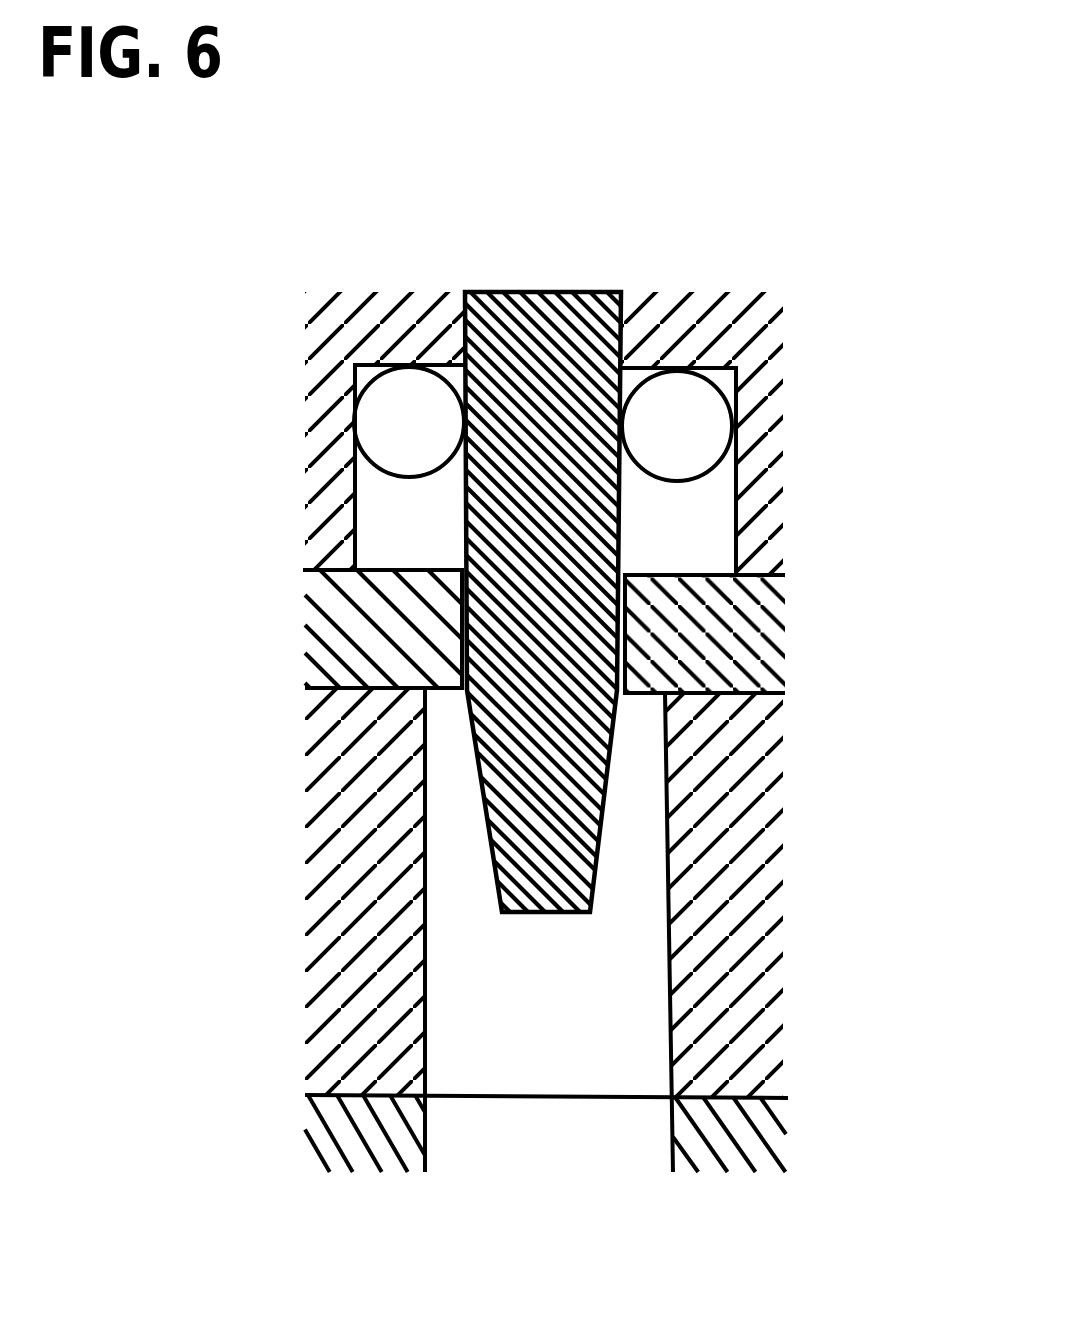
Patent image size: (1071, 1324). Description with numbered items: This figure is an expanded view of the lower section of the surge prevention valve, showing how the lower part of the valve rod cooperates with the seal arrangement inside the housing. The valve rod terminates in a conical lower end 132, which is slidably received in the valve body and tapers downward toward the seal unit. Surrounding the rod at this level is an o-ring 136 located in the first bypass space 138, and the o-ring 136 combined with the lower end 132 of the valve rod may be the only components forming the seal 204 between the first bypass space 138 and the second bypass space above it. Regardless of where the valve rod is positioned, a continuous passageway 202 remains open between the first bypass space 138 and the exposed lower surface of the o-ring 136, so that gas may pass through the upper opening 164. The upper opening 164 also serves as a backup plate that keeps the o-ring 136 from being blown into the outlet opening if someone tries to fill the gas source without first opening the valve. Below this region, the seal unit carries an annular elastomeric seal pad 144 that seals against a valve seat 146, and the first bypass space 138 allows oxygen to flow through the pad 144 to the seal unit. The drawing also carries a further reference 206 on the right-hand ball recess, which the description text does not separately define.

The conical lower end 132 is at (490, 697).
The o-ring 136 is at (712, 434).
The first bypass space 138 is at (620, 1132).
The annular elastomeric seal pad 144 is at (360, 878).
The valve seat 146 is at (363, 1117).
The upper opening 164 is at (698, 576).
The continuous passageway 202 is at (456, 629).
The seal 204 is at (462, 420).
The ball recess 206 is at (692, 483).